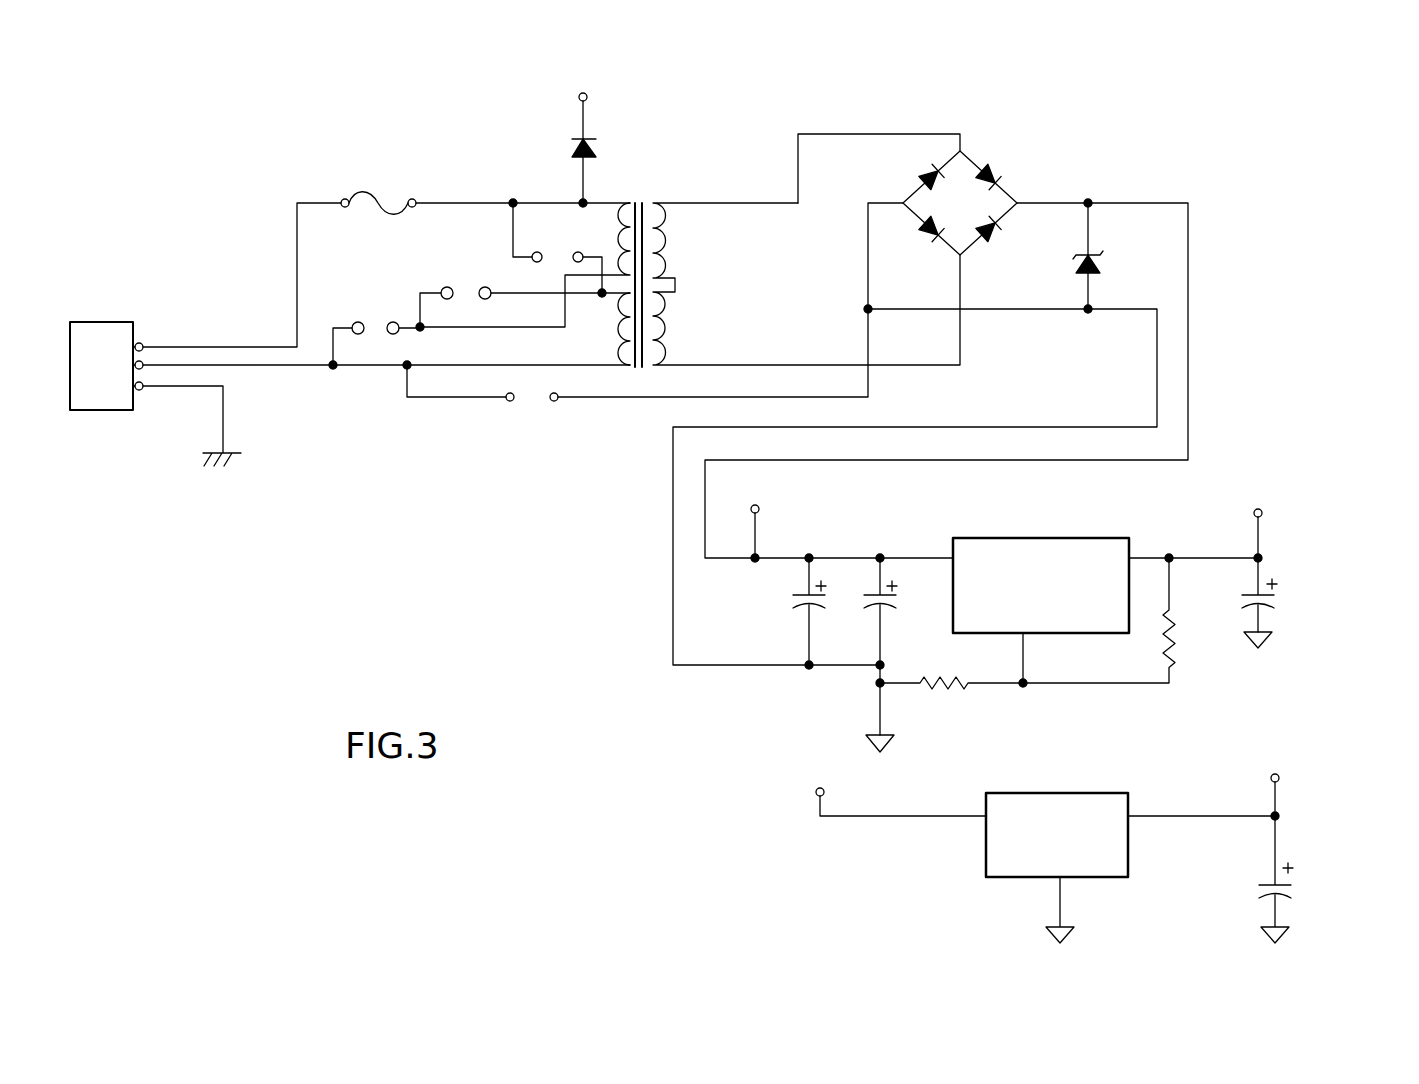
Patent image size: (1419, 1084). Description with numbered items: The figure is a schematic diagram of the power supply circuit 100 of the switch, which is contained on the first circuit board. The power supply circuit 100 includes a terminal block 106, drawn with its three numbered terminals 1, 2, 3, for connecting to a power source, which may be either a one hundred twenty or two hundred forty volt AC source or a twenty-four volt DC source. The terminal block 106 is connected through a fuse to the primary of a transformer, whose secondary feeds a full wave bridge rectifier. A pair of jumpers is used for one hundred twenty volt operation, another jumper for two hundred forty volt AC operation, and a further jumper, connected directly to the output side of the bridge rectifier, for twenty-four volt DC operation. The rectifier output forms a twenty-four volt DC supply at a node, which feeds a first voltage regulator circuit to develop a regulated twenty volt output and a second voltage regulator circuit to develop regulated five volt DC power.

The power supply circuit 100 is at (1327, 440).
The terminal block 106 is at (118, 332).
The terminal 1 of TB1 1 is at (128, 385).
The terminal 2 of TB1 2 is at (127, 366).
The terminal 3 of TB1 3 is at (127, 347).